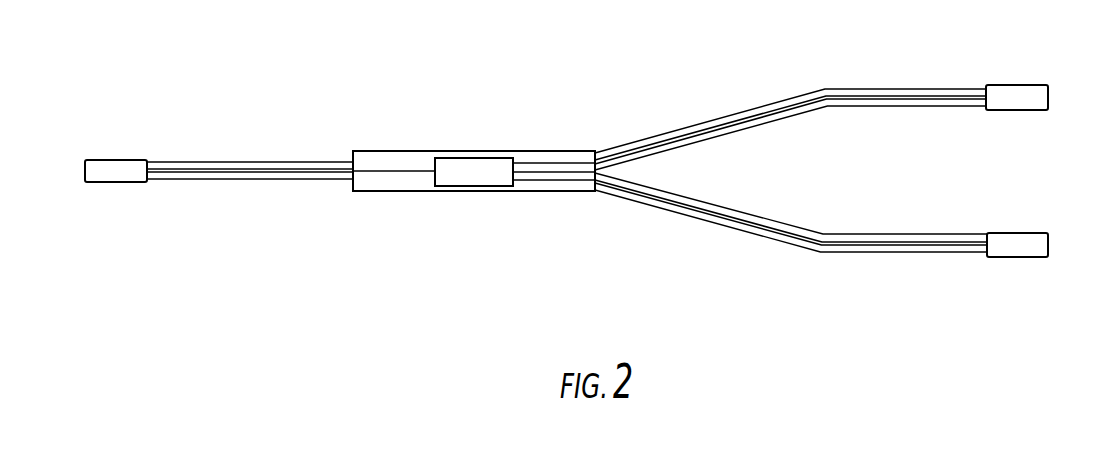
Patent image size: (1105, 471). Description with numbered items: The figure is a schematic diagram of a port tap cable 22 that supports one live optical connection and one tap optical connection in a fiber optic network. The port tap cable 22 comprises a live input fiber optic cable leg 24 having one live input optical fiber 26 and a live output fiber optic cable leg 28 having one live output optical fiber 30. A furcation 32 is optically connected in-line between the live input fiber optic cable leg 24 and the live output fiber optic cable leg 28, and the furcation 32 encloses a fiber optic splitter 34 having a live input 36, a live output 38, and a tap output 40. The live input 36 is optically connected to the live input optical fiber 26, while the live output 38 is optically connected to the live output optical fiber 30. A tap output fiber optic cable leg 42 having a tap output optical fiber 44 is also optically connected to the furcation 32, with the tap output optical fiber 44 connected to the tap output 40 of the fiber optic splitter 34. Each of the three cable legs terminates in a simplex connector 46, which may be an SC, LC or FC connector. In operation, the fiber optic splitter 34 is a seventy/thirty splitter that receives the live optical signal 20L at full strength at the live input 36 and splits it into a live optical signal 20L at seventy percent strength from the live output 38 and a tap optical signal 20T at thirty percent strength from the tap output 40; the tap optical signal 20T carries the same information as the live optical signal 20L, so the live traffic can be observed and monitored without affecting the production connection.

The port tap cable 22 is at (505, 58).
The live input fiber optic cable leg 24 is at (215, 162).
The live input optical fiber 26 is at (280, 162).
The live optical signal 20L is at (245, 178).
The tap optical signal 20T is at (824, 229).
The live output fiber optic cable leg 28 is at (732, 117).
The live output optical fiber 30 is at (845, 89).
The furcation 32 is at (562, 151).
The fiber optic splitter 34 is at (464, 158).
The live input 36 is at (433, 172).
The live output 38 is at (521, 151).
The tap output 40 is at (513, 187).
The tap output fiber optic cable leg 42 is at (720, 222).
The tap output optical fiber 44 is at (889, 235).
The simplex connector 46 is at (85, 170).